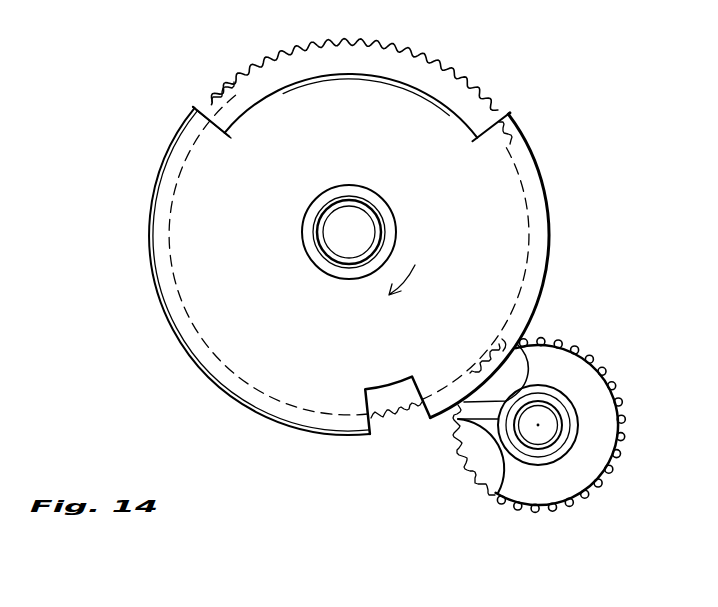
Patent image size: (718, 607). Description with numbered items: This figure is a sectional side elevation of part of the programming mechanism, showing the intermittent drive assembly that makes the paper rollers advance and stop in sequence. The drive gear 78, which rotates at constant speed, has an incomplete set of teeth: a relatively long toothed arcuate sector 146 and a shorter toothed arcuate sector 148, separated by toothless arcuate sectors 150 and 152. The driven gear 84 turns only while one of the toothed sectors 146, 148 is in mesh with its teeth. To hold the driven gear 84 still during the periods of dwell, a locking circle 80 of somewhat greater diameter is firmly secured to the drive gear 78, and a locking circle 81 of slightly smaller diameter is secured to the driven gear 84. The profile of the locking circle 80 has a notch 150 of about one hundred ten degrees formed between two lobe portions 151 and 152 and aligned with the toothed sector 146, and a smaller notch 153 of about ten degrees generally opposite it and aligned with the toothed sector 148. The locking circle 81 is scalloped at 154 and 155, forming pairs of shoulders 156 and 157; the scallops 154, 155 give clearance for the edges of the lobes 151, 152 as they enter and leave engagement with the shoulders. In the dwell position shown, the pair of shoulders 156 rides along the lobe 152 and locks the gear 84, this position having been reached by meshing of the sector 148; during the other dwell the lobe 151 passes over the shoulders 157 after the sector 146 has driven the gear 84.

The drive gear 78 is at (345, 75).
The locking circle 80 is at (361, 145).
The locking circle 81 is at (604, 434).
The driven gear 84 is at (605, 377).
The arcuate sector 146 is at (352, 38).
The arcuate sector 148 is at (390, 427).
The notch 150 is at (424, 91).
The lobe portion 151 is at (148, 247).
The lobe portion 152 is at (547, 193).
The notch 153 is at (392, 383).
The scallop 154 is at (518, 375).
The scallop 155 is at (506, 464).
The pair of shoulders 156 is at (498, 345).
The pair of shoulders 157 is at (485, 487).